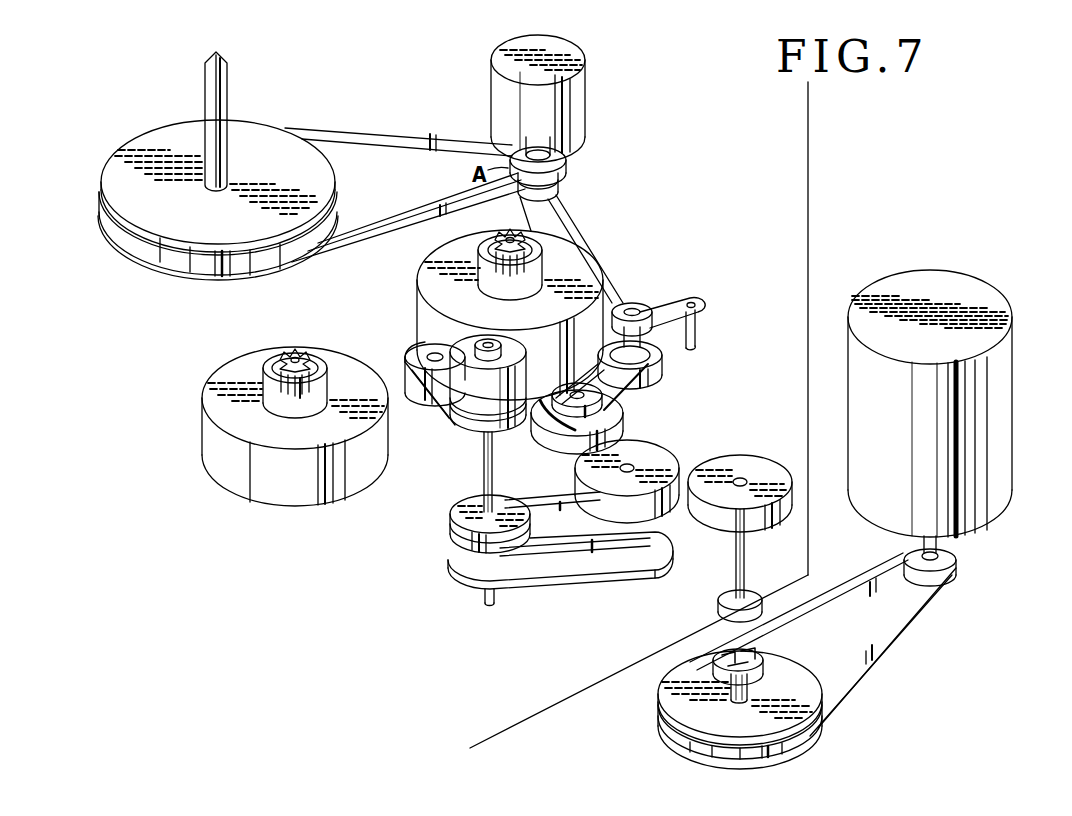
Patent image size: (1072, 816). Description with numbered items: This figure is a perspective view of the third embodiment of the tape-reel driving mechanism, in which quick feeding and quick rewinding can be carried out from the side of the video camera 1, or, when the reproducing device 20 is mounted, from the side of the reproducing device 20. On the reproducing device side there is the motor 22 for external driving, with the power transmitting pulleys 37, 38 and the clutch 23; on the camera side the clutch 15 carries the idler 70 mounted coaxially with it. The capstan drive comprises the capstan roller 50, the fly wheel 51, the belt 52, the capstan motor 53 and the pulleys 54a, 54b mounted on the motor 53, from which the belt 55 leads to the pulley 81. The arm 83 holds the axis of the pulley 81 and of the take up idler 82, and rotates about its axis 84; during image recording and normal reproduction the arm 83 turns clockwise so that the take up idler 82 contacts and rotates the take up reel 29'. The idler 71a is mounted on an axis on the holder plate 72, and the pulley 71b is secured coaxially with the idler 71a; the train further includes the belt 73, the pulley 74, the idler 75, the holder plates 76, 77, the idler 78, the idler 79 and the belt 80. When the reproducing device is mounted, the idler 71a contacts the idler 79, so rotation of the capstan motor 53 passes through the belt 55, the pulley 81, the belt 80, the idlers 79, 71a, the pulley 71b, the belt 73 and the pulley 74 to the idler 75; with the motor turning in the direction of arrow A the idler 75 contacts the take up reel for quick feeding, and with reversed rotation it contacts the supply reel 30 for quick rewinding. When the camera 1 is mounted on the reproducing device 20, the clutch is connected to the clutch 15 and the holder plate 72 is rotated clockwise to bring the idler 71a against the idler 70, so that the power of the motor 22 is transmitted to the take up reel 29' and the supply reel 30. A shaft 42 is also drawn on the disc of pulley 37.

The video camera 1 is at (780, 142).
The reproducing device 20 is at (852, 142).
The clutch 15 is at (716, 598).
The motor 22 is at (1000, 362).
The clutch 23 is at (762, 652).
The take up reel 29' is at (487, 314).
The supply reel 30 is at (255, 368).
The power transmitting pulley 37 is at (805, 710).
The power transmitting pulley 38 is at (957, 560).
The shaft 42 is at (750, 687).
The capstan roller 50 is at (228, 72).
The fly wheel 51 is at (258, 128).
The belt 52 is at (372, 134).
The capstan motor 53 is at (582, 96).
The pulley 54a is at (568, 156).
The pulley 54b is at (566, 190).
The belt 55 is at (595, 237).
The idler 70 is at (740, 460).
The idler 71a is at (660, 456).
The pulley 71b is at (610, 548).
The holder plate 72 is at (572, 565).
The belt 73 is at (538, 558).
The pulley 74 is at (452, 520).
The idler 75 is at (420, 392).
The holder plate 76 is at (455, 426).
The holder plate 77 is at (482, 434).
The idler 78 is at (535, 440).
The idler 79 is at (605, 410).
The belt 80 is at (640, 394).
The pulley 81 is at (660, 358).
The take up idler 82 is at (646, 306).
The arm 83 is at (672, 305).
The axis 84 is at (698, 326).